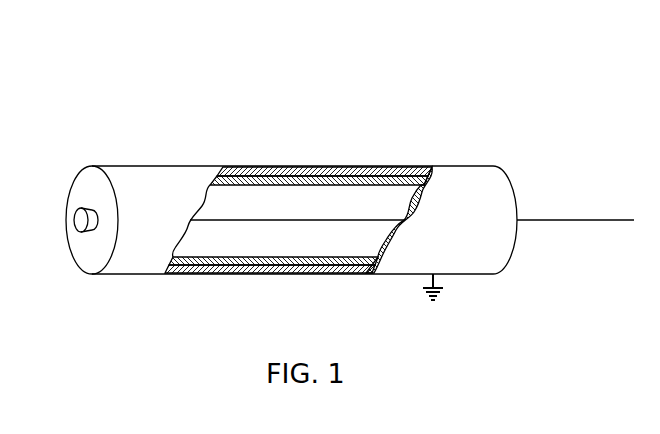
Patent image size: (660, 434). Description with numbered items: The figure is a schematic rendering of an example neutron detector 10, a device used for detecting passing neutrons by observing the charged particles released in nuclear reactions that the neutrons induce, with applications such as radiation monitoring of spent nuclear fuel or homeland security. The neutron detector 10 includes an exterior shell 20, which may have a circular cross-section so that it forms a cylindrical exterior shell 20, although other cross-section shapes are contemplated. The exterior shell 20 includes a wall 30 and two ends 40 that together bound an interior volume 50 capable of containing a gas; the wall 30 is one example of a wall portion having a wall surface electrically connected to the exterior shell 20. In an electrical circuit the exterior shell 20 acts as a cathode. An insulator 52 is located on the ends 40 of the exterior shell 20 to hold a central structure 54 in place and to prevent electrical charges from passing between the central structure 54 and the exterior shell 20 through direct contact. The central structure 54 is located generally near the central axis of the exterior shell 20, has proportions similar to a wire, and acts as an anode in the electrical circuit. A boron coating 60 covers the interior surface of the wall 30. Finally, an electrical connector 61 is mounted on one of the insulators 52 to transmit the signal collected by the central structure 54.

The neutron detector 10 is at (425, 97).
The exterior shell 20 is at (162, 166).
The wall 30 is at (260, 167).
The end 40 is at (77, 254).
The interior volume 50 is at (292, 209).
The insulator 52 is at (80, 218).
The central structure 54 is at (313, 221).
The boron coating 60 is at (352, 184).
The electrical connector 61 is at (576, 220).